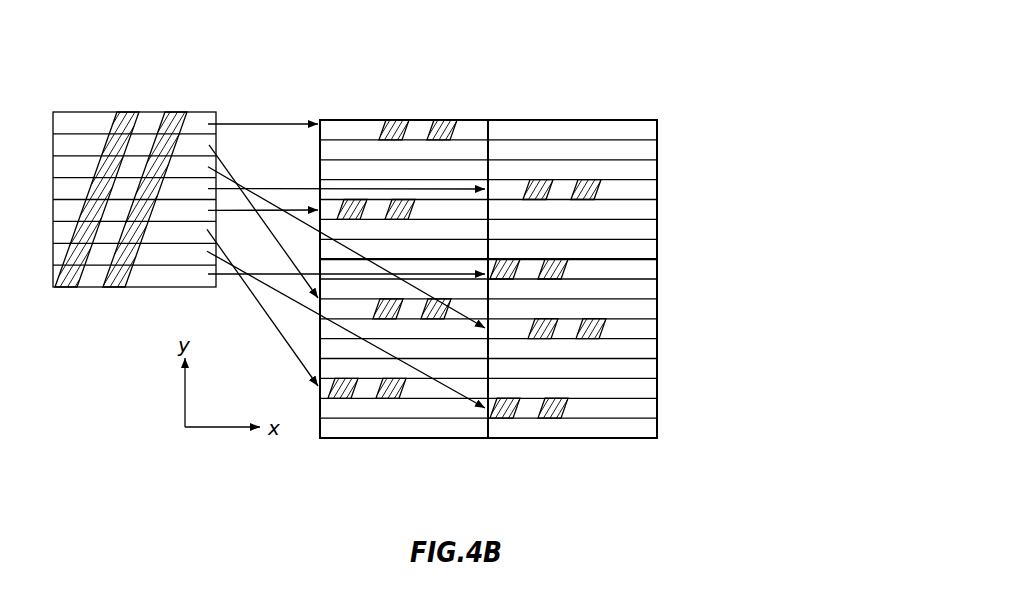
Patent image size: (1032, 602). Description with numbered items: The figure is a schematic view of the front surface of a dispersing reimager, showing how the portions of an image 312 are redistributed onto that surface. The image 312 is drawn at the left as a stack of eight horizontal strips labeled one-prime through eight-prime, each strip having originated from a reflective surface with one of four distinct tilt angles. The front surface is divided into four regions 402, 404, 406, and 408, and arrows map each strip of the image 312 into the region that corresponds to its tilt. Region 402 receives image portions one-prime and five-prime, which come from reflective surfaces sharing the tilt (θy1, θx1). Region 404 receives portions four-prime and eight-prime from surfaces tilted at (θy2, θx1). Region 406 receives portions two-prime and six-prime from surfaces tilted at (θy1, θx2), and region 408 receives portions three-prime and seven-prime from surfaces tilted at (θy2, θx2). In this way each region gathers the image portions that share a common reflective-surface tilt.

The image 312 is at (131, 100).
The region 402 is at (422, 118).
The region 404 is at (660, 190).
The region 406 is at (413, 441).
The region 408 is at (660, 371).